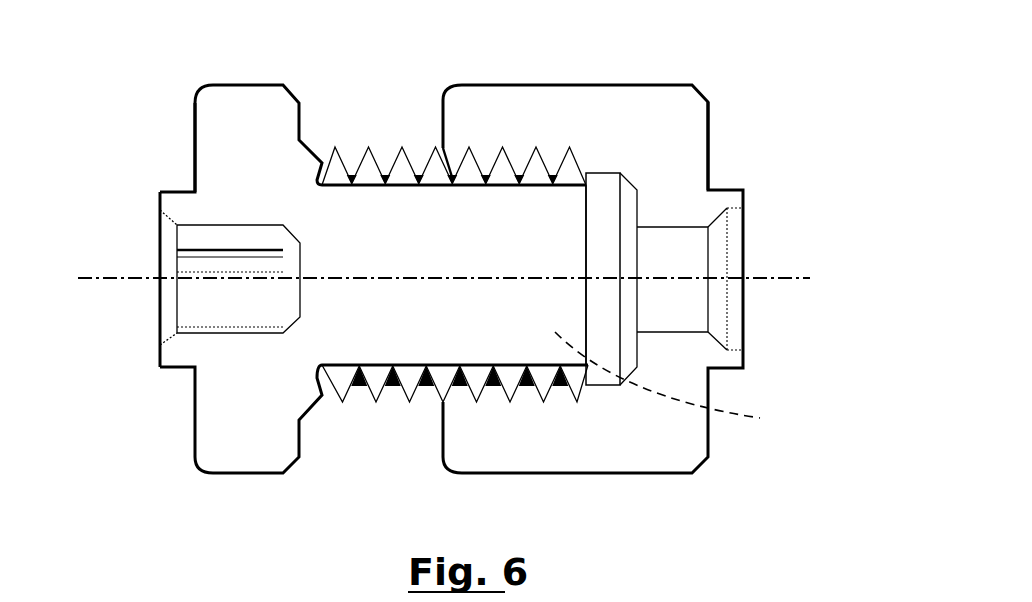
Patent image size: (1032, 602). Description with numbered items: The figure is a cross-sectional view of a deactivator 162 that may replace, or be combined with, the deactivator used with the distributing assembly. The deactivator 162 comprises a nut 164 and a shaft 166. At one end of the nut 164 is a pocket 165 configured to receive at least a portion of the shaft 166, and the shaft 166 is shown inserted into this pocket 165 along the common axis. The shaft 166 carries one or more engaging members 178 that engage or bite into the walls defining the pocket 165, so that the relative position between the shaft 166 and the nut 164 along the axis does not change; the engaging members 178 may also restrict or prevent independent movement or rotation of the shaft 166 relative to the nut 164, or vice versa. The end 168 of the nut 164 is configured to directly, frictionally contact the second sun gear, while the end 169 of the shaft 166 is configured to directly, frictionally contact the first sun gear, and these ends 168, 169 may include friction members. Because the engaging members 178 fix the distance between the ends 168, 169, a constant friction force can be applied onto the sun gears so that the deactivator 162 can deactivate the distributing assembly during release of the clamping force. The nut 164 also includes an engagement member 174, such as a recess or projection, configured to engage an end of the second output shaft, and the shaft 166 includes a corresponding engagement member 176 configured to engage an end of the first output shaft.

The deactivator 162 is at (143, 60).
The nut 164 is at (660, 123).
The pocket 165 is at (680, 384).
The shaft 166 is at (250, 113).
The end of the nut 168 is at (468, 242).
The end of the shaft 169 is at (195, 148).
The engagement member 174 is at (677, 310).
The engagement member 176 is at (218, 315).
The engaging members 178 is at (507, 158).